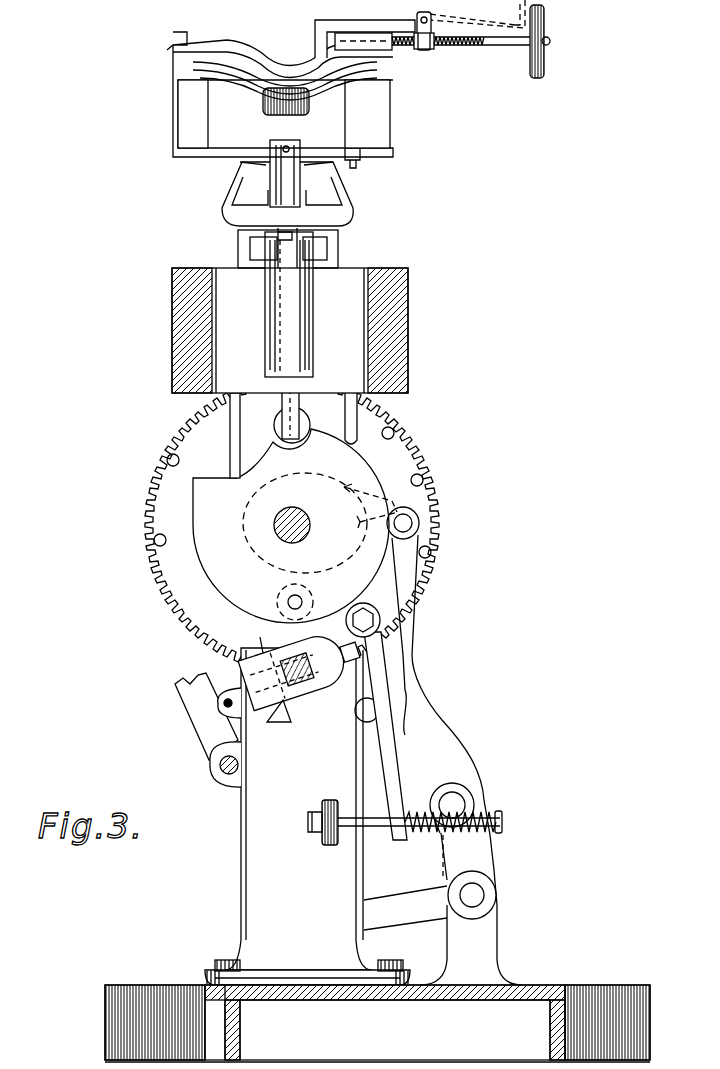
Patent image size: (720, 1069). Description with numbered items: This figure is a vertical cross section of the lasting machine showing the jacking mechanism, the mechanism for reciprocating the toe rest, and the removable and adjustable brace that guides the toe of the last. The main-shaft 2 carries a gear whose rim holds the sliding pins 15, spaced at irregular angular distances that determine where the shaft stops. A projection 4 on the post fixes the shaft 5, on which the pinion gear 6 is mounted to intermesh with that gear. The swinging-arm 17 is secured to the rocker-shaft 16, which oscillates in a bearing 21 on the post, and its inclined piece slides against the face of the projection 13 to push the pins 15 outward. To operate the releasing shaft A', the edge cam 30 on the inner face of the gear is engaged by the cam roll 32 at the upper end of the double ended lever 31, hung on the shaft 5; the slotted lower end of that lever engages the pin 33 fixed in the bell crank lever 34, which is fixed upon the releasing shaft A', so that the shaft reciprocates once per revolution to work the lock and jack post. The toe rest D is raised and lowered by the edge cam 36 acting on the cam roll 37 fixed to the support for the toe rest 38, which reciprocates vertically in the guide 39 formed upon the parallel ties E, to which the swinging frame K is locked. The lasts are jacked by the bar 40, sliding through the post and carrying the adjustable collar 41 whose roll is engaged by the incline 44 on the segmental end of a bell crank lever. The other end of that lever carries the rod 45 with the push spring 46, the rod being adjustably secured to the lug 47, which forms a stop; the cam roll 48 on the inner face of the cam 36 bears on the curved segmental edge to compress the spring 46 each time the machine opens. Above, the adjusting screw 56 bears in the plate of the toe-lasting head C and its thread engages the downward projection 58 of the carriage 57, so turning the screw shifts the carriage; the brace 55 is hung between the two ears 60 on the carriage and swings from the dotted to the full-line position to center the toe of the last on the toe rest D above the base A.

The main-shaft 2 is at (284, 536).
The projection 4 is at (412, 710).
The shaft 5 is at (372, 712).
The pinion gear 6 is at (275, 113).
The projection 13 is at (385, 736).
The pins 15 is at (448, 484).
The rocker-shaft 16 is at (221, 766).
The swinging-arm 17 is at (206, 716).
The bearing 21 is at (222, 776).
The edge cam 30 is at (320, 523).
The double ended lever 31 is at (396, 683).
The cam roll 32 is at (410, 523).
The pin 33 is at (462, 806).
The bell crank lever 34 is at (419, 888).
The edge cam 36 is at (291, 526).
The cam roll 37 is at (276, 424).
The support for the toe rest 38 is at (300, 386).
The guide 39 is at (300, 327).
The bar 40 is at (300, 684).
The collar 41 is at (348, 668).
The incline 44 is at (279, 722).
The rod 45 is at (386, 830).
The push spring 46 is at (492, 832).
The lug 47 is at (330, 846).
The cam roll 48 is at (301, 600).
The brace 55 is at (420, 29).
The adjusting screw 56 is at (471, 41).
The carriage 57 is at (368, 30).
The downward projection 58 is at (426, 50).
The ears 60 is at (428, 16).
The base A is at (377, 1023).
The releasing shaft A' is at (493, 895).
The toe-lasting head C is at (280, 92).
The toe rest D is at (287, 171).
The parallel ties E is at (290, 330).
The swinging frame K is at (307, 816).